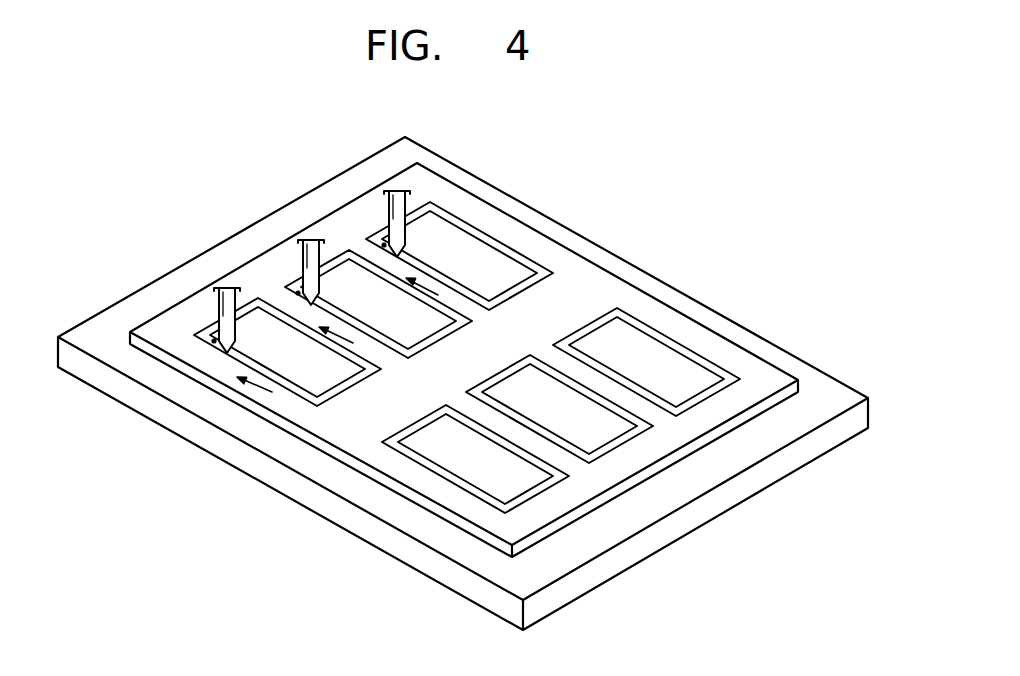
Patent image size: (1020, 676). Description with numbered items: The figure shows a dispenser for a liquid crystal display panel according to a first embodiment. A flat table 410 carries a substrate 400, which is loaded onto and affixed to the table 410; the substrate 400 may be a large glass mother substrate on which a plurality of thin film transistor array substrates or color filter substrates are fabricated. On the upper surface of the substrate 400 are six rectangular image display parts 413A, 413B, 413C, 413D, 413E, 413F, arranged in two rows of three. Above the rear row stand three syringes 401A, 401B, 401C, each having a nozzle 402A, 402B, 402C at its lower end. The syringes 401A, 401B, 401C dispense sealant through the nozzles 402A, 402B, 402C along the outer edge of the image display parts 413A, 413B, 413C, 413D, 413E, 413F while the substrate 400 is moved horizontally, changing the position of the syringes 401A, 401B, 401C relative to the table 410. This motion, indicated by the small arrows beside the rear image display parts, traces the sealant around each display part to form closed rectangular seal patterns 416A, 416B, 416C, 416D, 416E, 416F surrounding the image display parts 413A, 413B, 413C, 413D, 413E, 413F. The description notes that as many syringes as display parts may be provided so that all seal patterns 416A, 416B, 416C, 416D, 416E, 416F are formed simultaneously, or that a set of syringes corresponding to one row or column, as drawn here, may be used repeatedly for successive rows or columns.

The substrate 400 is at (710, 338).
The table 410 is at (813, 383).
The syringe 401A is at (219, 296).
The syringe 401B is at (303, 258).
The syringe 401C is at (389, 213).
The nozzle 402A is at (212, 340).
The nozzle 402B is at (296, 292).
The nozzle 402C is at (382, 245).
The image display part 413A is at (672, 371).
The image display part 413B is at (585, 423).
The image display part 413C is at (499, 471).
The image display part 413D is at (482, 266).
The image display part 413E is at (399, 313).
The image display part 413F is at (320, 370).
The seal pattern 416A is at (713, 395).
The seal pattern 416B is at (627, 443).
The seal pattern 416C is at (540, 493).
The seal pattern 416D is at (490, 236).
The seal pattern 416E is at (440, 340).
The seal pattern 416F is at (355, 390).